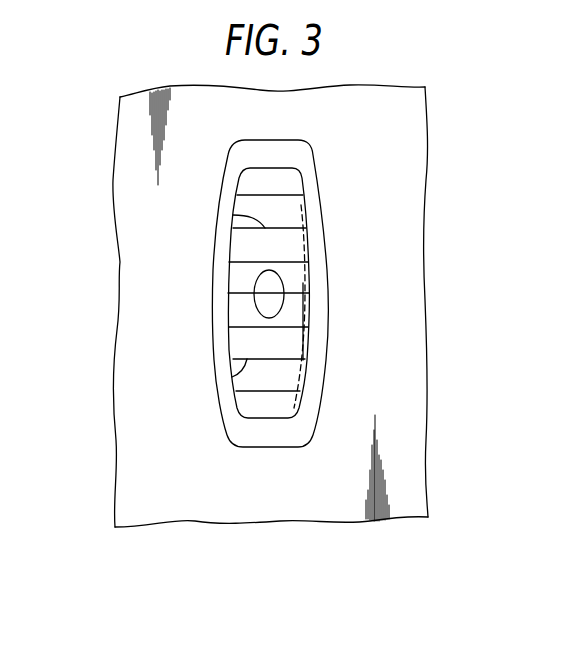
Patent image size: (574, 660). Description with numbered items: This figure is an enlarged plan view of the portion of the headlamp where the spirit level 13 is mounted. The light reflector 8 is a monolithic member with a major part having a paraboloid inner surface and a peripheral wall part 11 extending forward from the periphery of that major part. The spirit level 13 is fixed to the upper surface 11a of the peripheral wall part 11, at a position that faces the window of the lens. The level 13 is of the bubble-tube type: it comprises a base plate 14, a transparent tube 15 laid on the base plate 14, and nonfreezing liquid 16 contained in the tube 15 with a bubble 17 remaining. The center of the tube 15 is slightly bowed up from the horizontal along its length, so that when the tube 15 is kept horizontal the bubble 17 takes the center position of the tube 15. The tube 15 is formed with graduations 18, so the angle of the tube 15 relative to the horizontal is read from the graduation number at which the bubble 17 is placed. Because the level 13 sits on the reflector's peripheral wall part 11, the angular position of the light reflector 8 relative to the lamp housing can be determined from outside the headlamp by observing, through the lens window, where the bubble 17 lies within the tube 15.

The light reflector 8 is at (120, 262).
The peripheral wall part 11 is at (122, 412).
The upper surface 11a is at (140, 464).
The spirit level 13 is at (331, 293).
The base plate 14 is at (322, 270).
The transparent tube 15 is at (235, 278).
The nonfreezing liquid 16 is at (290, 343).
The bubble 17 is at (255, 300).
The graduations 18 is at (233, 215).